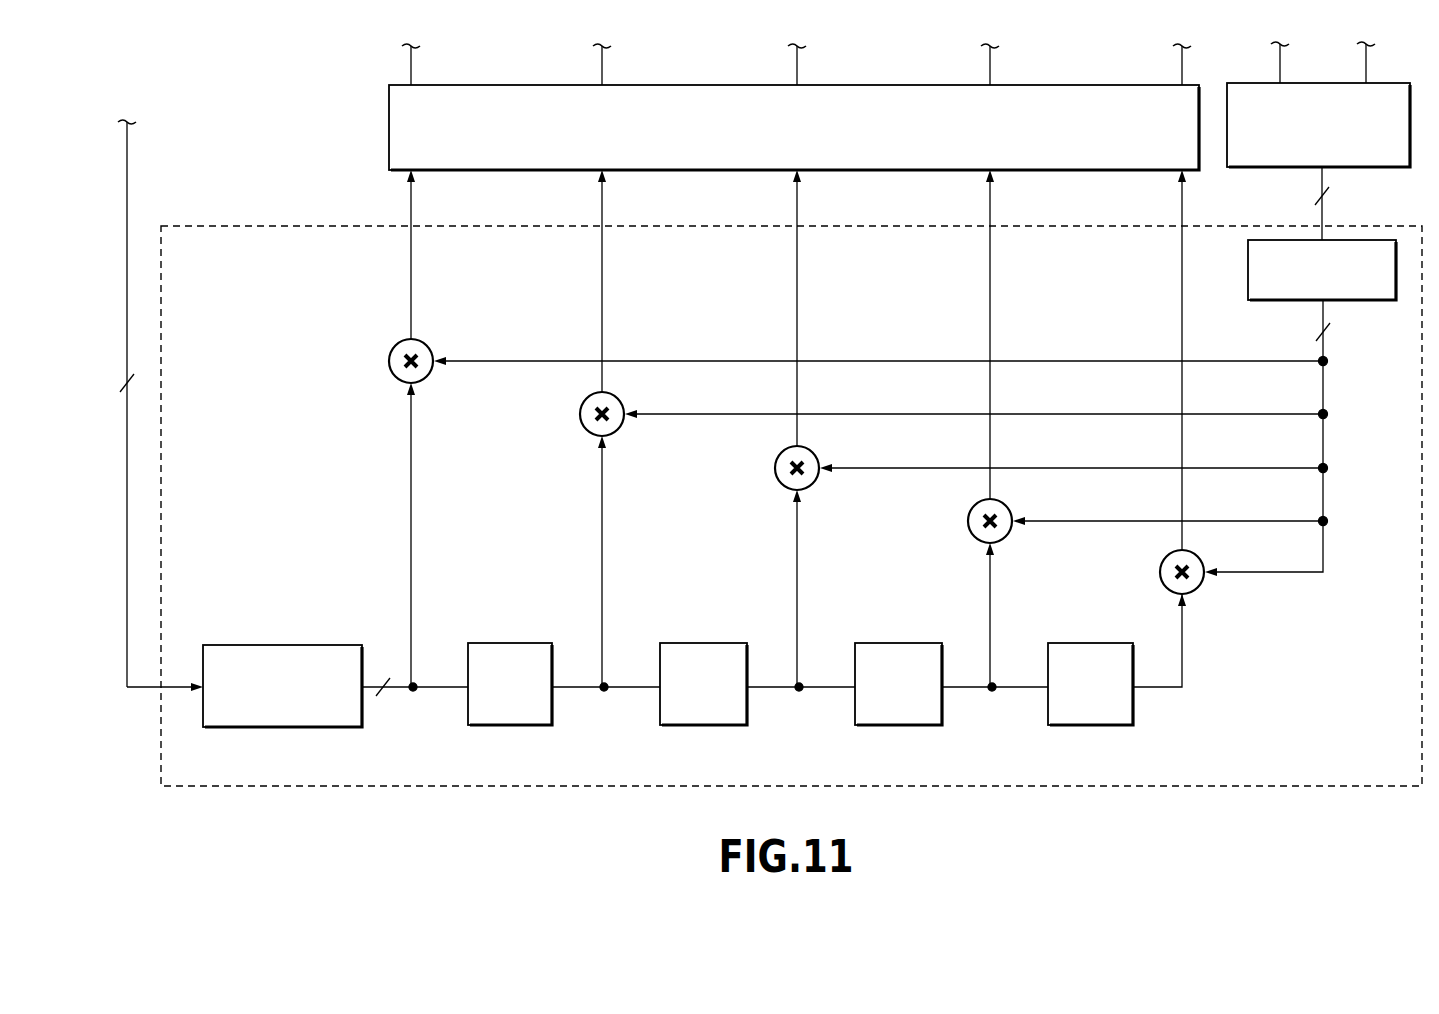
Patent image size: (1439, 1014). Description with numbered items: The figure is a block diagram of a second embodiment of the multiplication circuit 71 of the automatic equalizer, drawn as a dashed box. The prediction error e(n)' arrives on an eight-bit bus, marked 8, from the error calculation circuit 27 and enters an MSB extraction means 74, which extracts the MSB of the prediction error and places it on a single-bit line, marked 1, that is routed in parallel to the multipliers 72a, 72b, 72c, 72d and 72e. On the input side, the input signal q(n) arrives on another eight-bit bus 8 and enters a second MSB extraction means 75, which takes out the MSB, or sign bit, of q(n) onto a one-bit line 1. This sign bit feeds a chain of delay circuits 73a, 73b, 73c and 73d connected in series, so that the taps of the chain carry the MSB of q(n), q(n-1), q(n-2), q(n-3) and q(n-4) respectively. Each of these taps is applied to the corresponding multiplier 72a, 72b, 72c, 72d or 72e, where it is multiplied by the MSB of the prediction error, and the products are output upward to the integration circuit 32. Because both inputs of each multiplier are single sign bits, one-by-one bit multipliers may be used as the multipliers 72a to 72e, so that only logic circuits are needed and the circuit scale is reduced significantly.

The integration circuit 32 is at (1080, 83).
The error calculation circuit 27 is at (1392, 83).
The MSB extraction means 74 is at (1372, 300).
The MSB extraction means 75 is at (301, 645).
The multiplication circuit 71 is at (253, 226).
The multiplier 72a is at (376, 365).
The multiplier 72b is at (578, 420).
The multiplier 72c is at (772, 478).
The multiplier 72d is at (959, 526).
The multiplier 72e is at (1200, 600).
The delay circuit 73a is at (501, 645).
The delay circuit 73b is at (699, 645).
The delay circuit 73c is at (894, 645).
The delay circuit 73d is at (1085, 645).
The 8-bit bus 8 is at (725, 405).
The 1-bit line 1 is at (855, 498).